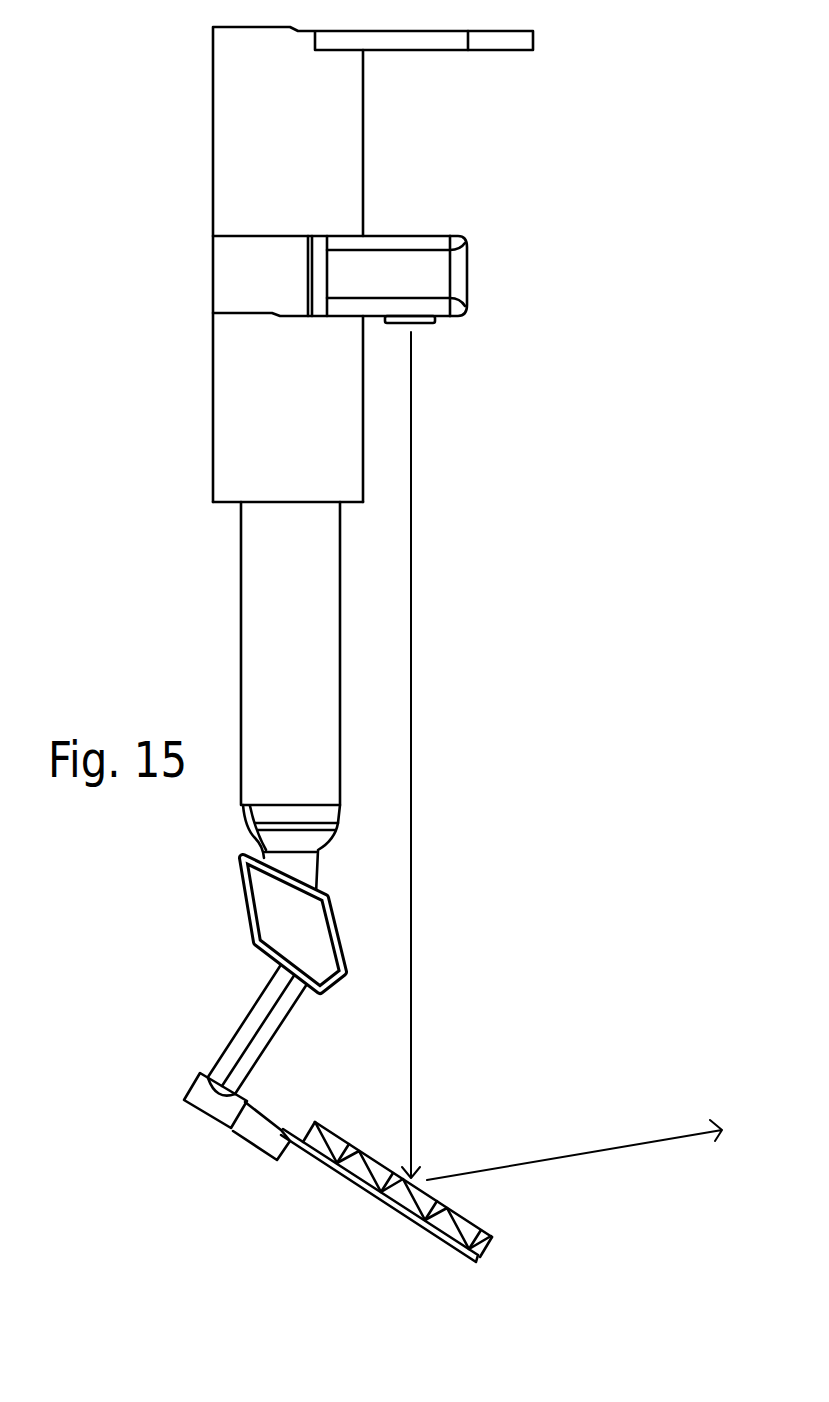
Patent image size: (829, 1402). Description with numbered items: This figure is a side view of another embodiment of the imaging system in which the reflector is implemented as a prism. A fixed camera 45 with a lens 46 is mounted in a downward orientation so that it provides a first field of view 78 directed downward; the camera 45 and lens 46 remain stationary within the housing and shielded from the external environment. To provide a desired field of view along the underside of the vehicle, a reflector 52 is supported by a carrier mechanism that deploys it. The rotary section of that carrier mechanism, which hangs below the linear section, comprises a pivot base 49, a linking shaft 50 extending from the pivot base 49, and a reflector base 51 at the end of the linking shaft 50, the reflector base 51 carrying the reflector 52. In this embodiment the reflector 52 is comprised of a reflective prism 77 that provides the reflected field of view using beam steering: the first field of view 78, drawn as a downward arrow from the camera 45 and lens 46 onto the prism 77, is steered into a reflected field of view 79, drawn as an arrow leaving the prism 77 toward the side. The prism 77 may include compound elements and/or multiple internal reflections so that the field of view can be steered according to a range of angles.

The camera 45 is at (407, 257).
The lens 46 is at (427, 323).
The pivot base 49 is at (242, 900).
The linking shaft 50 is at (240, 1025).
The reflector base 51 is at (223, 1139).
The reflector 52 is at (388, 1205).
The reflective prism 77 is at (348, 1143).
The first field of view 78 is at (411, 552).
The reflected field of view 79 is at (599, 1152).